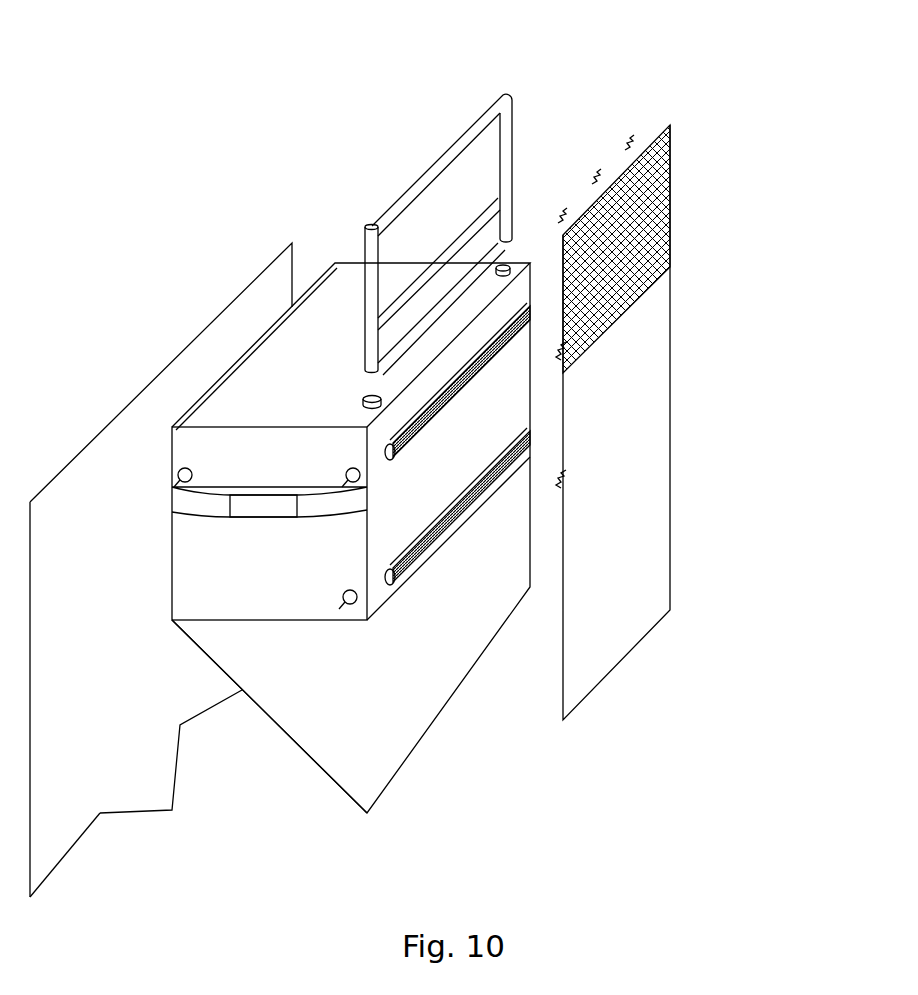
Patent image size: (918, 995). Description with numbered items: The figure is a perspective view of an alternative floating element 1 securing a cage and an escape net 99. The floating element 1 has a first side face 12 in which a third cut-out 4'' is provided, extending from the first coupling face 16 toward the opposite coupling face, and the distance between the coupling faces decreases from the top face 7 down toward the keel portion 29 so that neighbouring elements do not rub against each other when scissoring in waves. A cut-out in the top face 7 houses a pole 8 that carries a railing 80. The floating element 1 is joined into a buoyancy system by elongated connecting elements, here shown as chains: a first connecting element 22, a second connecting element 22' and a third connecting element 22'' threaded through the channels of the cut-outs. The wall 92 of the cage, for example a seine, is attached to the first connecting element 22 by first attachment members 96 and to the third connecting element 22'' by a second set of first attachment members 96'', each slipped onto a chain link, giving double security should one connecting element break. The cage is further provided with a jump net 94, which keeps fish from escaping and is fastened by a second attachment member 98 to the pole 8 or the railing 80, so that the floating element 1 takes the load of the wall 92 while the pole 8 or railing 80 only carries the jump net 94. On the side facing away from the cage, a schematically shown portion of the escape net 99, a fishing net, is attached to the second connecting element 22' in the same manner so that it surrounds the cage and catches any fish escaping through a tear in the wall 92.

The floating element 1 is at (243, 202).
The top face 7 is at (347, 262).
The pole 8 is at (511, 135).
The railing 80 is at (427, 167).
The third cut-out 4'' is at (487, 414).
The first side face 12 is at (413, 705).
The first coupling face 16 is at (190, 556).
The first elongated connecting element 22 is at (208, 411).
The second elongated connecting element 22' is at (109, 444).
The third connecting element 22'' is at (393, 725).
The keel portion 29 is at (345, 795).
The escape net 99 is at (87, 832).
The wall 92 is at (670, 502).
The jump net 94 is at (668, 213).
The first attachment member 96 is at (683, 367).
The first attachment member 96'' is at (688, 535).
The second attachment member 98 is at (548, 216).